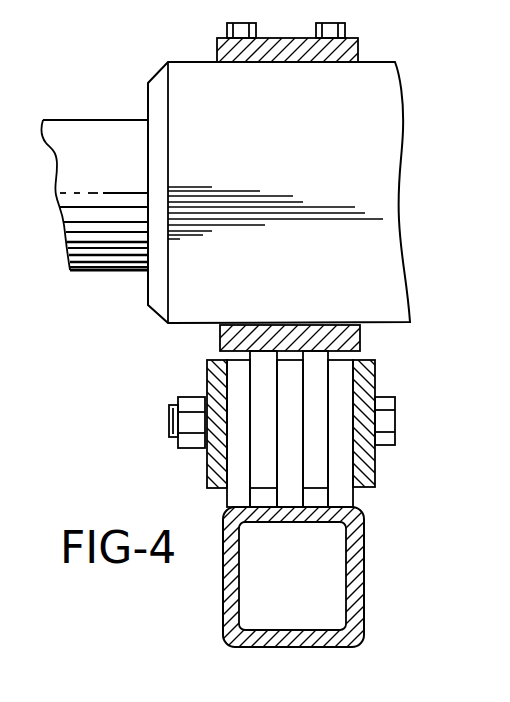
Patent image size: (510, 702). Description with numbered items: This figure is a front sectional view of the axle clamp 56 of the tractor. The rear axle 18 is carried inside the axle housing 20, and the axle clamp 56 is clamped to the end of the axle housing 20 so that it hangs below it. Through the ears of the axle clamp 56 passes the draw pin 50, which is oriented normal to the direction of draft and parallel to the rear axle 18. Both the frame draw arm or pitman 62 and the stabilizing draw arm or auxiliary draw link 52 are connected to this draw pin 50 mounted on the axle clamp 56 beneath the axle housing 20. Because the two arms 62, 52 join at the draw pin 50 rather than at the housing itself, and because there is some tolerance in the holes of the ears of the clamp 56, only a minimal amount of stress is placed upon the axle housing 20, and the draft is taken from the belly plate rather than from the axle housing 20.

The axle 18 is at (78, 127).
The axle housing 20 is at (292, 139).
The draw pin 50 is at (178, 414).
The stabilizing draw arm 52 is at (365, 587).
The axle clamp 56 is at (362, 330).
The frame draw arm 62 is at (207, 377).